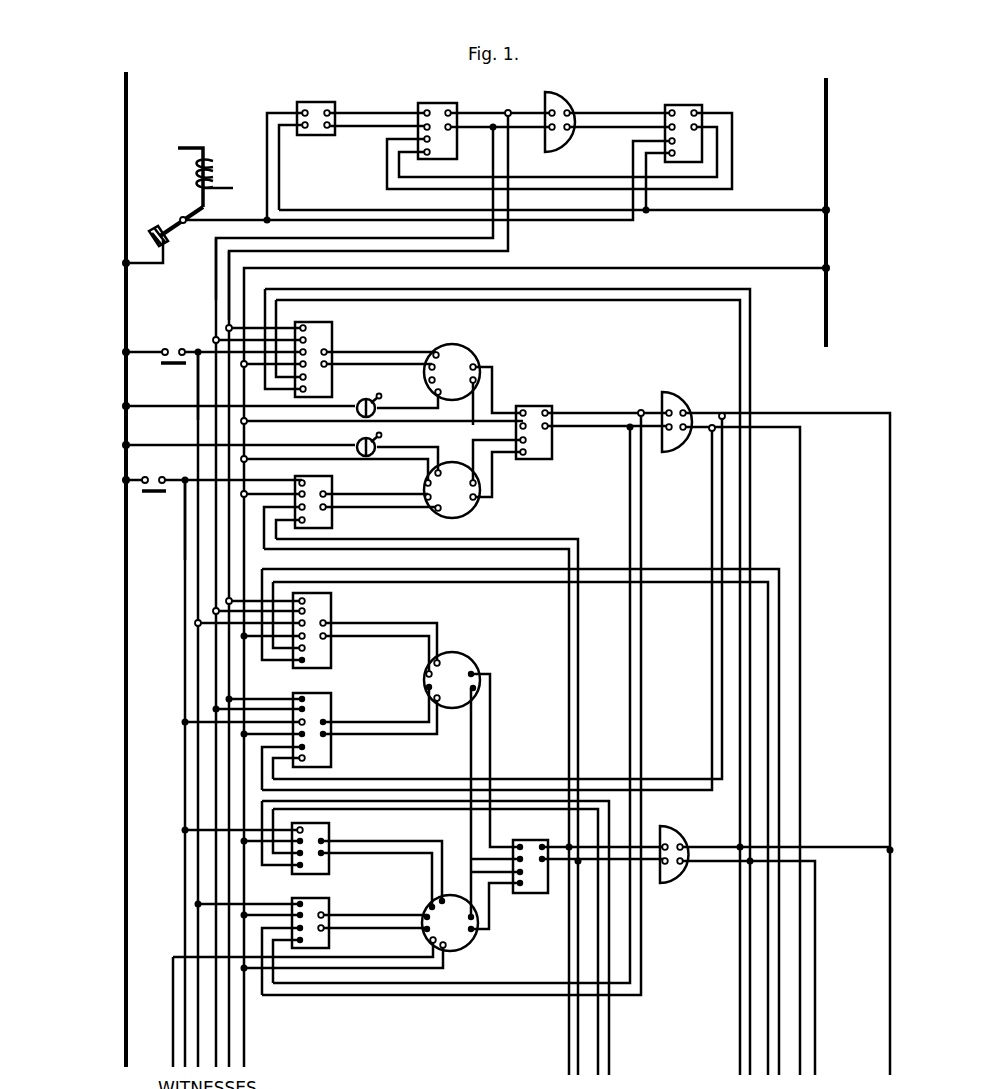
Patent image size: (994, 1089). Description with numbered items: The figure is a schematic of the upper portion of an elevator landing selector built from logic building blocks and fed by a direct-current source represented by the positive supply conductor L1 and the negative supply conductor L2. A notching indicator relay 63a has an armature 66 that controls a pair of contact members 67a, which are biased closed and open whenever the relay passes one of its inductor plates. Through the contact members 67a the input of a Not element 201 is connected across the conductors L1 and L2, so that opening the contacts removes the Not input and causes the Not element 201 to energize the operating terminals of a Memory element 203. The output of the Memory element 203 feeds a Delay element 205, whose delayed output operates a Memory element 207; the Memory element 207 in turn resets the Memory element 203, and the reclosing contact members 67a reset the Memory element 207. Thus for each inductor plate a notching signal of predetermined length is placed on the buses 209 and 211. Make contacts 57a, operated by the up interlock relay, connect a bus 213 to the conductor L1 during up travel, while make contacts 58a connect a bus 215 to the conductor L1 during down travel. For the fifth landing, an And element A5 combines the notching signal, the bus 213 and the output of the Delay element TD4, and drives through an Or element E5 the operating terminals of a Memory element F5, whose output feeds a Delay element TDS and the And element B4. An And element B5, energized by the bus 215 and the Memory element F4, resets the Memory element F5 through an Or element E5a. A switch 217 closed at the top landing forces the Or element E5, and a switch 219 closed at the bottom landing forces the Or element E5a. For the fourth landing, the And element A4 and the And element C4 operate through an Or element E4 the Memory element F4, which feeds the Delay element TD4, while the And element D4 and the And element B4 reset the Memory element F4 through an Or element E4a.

The supply conductor L1 is at (129, 107).
The supply conductor L2 is at (828, 116).
The Not element 201 is at (324, 102).
The Memory element 203 is at (446, 103).
The Delay element 205 is at (567, 108).
The Memory element 207 is at (689, 105).
The notching indicator relay 63a is at (250, 161).
The armature 66 is at (176, 219).
The contact members 67a is at (167, 243).
The bus 209 is at (228, 300).
The bus 211 is at (215, 281).
The bus 213 is at (198, 393).
The bus 215 is at (186, 541).
The make contacts 57a is at (178, 366).
The make contacts 58a is at (158, 494).
The switch 217 is at (377, 398).
The switch 219 is at (362, 444).
The And element A5 is at (311, 324).
The And element B5 is at (332, 482).
The Or element E5 is at (467, 348).
The Or element E5a is at (468, 512).
The Memory element F5 is at (548, 406).
The Delay element TDS is at (672, 385).
The And element A4 is at (331, 604).
The And element C4 is at (331, 703).
The Or element E4 is at (462, 656).
The And element D4 is at (330, 831).
The And element B4 is at (330, 903).
The Memory element F4 is at (540, 840).
The Or element E4a is at (466, 944).
The Delay element TD4 is at (679, 838).